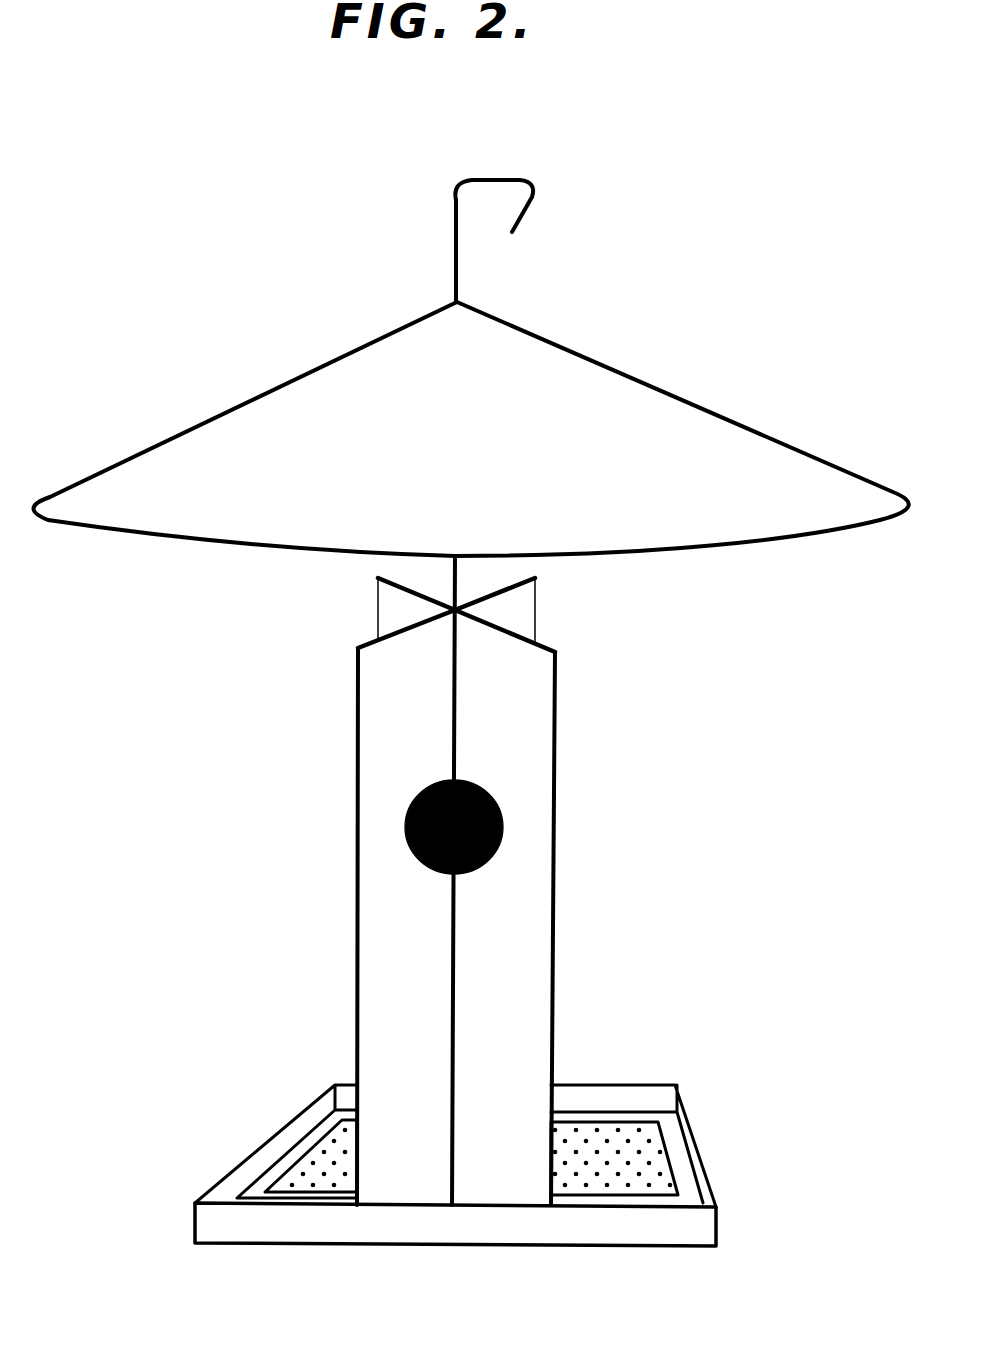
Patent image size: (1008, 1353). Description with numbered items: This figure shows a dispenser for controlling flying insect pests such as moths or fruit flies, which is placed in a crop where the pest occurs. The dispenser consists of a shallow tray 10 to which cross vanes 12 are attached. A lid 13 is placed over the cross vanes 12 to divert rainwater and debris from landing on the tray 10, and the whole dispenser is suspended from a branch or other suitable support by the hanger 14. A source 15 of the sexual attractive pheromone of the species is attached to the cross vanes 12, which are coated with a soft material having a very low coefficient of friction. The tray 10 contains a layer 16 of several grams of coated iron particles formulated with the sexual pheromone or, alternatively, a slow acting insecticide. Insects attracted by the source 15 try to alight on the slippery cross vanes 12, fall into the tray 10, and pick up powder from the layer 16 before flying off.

The tray 10 is at (208, 1217).
The cross vanes 12 is at (373, 935).
The lid 13 is at (243, 423).
The hanger 14 is at (456, 246).
The source 15 is at (503, 838).
The layer 16 is at (633, 1165).